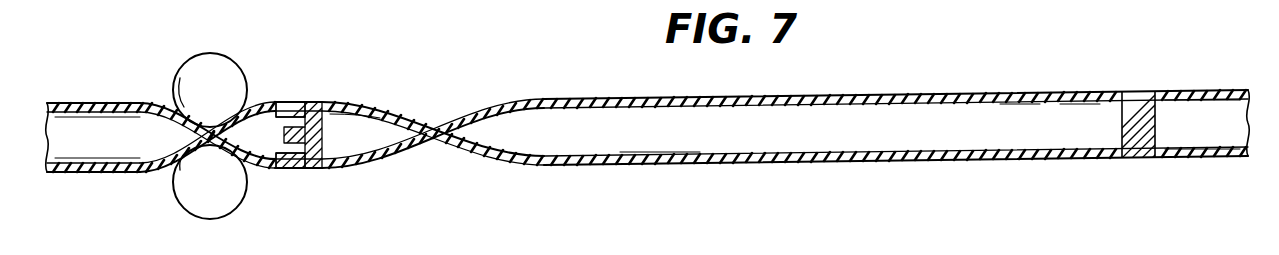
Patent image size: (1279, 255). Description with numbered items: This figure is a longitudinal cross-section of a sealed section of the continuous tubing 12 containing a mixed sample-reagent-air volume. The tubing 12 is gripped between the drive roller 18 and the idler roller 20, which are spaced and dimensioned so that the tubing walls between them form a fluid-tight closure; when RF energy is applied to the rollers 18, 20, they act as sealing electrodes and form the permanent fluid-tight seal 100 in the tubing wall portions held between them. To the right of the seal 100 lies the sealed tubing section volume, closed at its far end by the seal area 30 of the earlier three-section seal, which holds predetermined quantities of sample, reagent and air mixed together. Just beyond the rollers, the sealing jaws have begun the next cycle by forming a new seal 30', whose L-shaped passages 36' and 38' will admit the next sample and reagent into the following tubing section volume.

The tubing 12 is at (648, 127).
The drive roller 18 is at (229, 207).
The idler roller 20 is at (200, 54).
The seal area 30 is at (1155, 112).
The seal 30' is at (310, 122).
The passage 36' is at (283, 184).
The passage 38' is at (281, 79).
The seal 100 is at (437, 142).